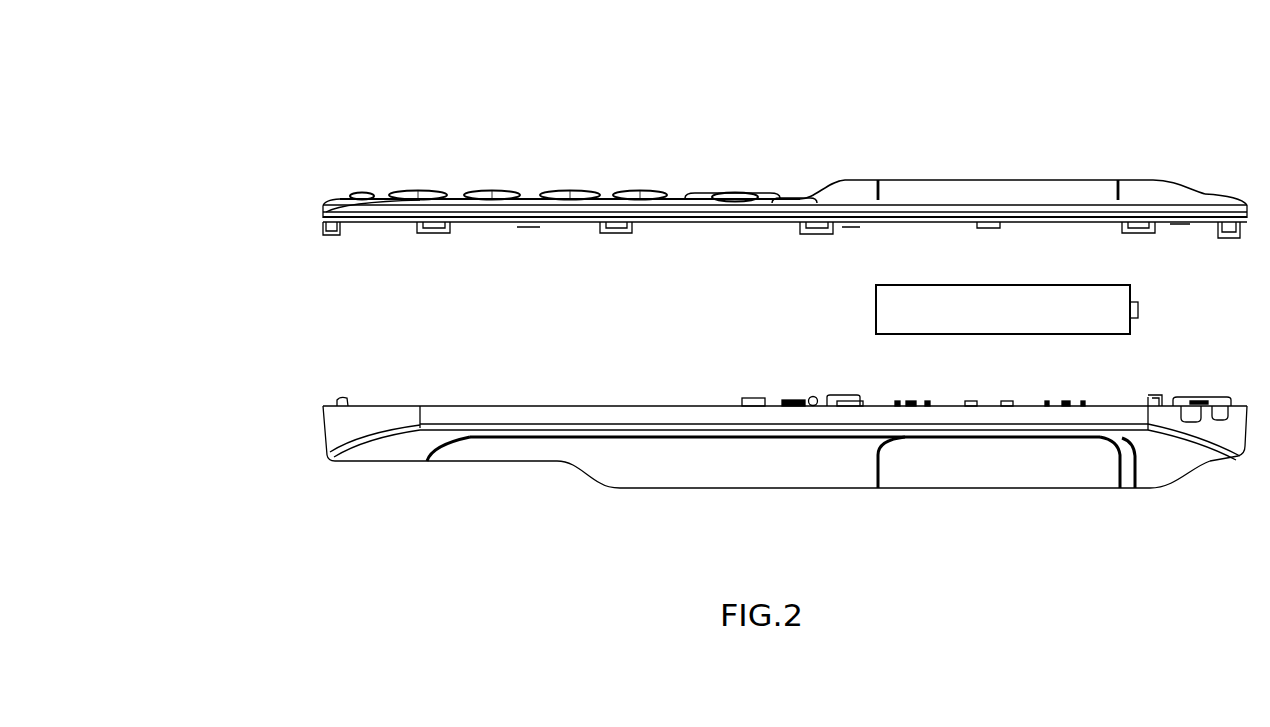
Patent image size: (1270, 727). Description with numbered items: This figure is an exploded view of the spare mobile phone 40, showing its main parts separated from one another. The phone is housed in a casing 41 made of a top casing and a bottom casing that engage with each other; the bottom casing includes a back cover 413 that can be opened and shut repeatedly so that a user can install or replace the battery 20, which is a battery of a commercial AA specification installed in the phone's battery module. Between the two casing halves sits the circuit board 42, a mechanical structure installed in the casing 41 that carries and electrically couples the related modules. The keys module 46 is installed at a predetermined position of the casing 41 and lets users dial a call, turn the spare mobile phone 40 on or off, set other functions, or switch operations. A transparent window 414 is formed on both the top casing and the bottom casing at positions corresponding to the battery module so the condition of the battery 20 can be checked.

The battery 20 is at (907, 302).
The spare mobile phone 40 is at (287, 162).
The casing 41 is at (298, 273).
The circuit board 42 is at (772, 405).
The keys module 46 is at (543, 150).
The back cover 413 is at (668, 473).
The transparent window 414 is at (1022, 186).